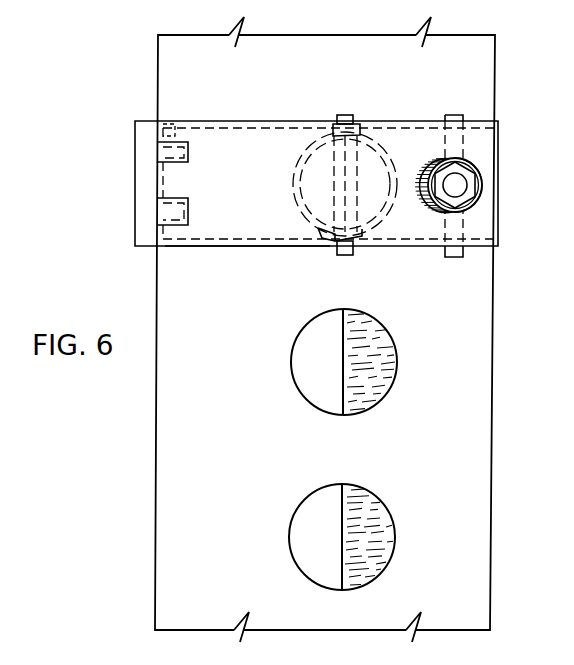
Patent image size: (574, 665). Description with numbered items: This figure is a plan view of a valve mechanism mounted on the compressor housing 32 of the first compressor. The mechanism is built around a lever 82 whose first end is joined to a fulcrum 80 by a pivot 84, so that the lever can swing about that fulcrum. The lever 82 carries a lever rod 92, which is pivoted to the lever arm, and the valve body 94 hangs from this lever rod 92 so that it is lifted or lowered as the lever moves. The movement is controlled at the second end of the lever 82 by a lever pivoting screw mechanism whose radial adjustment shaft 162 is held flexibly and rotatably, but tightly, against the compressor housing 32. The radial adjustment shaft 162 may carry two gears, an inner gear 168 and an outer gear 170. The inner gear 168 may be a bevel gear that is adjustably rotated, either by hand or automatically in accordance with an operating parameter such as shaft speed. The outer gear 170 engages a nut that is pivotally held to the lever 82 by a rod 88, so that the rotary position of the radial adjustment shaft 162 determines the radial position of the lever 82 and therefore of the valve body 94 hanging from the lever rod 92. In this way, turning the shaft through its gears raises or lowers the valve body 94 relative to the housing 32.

The compressor housing 32 is at (494, 265).
The fulcrum 80 is at (163, 212).
The lever 82 is at (241, 234).
The pivot 84 is at (170, 128).
The rod 88 is at (450, 257).
The lever rod 92 is at (332, 163).
The valve body 94 is at (322, 228).
The radial adjustment shaft 162 is at (457, 183).
The inner gear 168 is at (436, 213).
The outer gear 170 is at (473, 195).